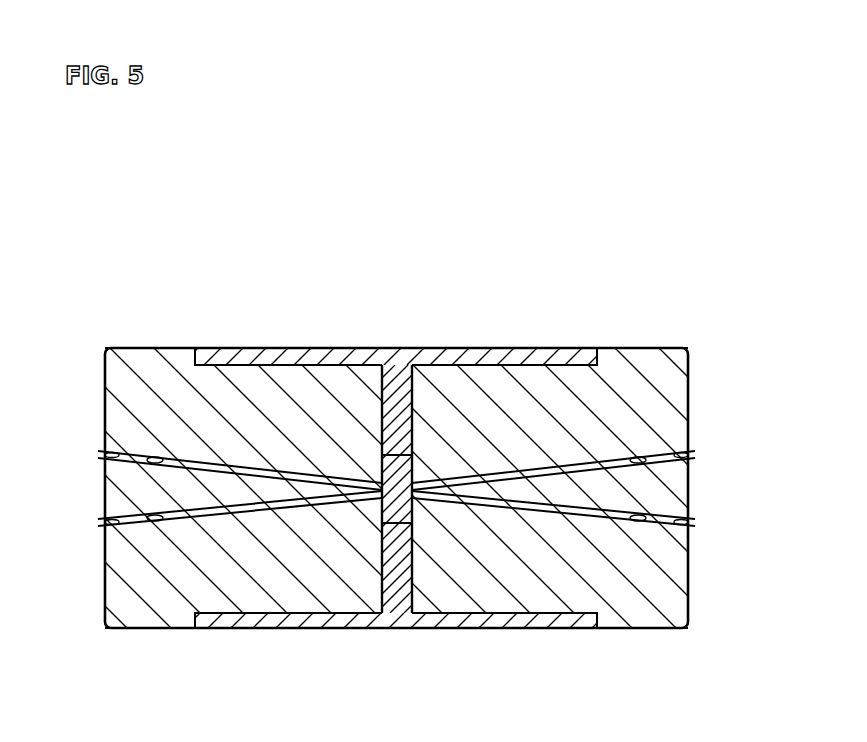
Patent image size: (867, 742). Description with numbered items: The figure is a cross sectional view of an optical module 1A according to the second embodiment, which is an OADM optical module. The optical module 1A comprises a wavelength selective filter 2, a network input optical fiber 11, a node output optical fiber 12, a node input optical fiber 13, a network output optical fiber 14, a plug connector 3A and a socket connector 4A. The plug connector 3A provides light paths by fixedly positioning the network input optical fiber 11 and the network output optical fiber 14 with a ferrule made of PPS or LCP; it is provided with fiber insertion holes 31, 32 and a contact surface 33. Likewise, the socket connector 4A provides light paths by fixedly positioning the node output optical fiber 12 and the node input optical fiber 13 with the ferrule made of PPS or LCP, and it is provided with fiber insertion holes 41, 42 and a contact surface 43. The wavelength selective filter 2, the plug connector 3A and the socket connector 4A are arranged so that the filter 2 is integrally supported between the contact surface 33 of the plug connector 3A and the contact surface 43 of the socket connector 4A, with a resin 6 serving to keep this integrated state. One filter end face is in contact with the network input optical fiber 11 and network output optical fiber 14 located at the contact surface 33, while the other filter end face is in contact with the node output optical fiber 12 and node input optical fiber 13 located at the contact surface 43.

The optical module 1A is at (263, 273).
The wavelength selective filter 2 is at (412, 418).
The plug connector 3A is at (164, 348).
The socket connector 4A is at (650, 348).
The resin 6 is at (397, 362).
The network input optical fiber 11 is at (108, 453).
The node output optical fiber 12 is at (645, 524).
The node input optical fiber 13 is at (688, 447).
The network output optical fiber 14 is at (135, 525).
The fiber insertion hole 31 is at (142, 462).
The fiber insertion hole 32 is at (120, 522).
The contact surface 33 is at (385, 600).
The fiber insertion hole 41 is at (640, 468).
The fiber insertion hole 42 is at (665, 521).
The contact surface 43 is at (410, 600).